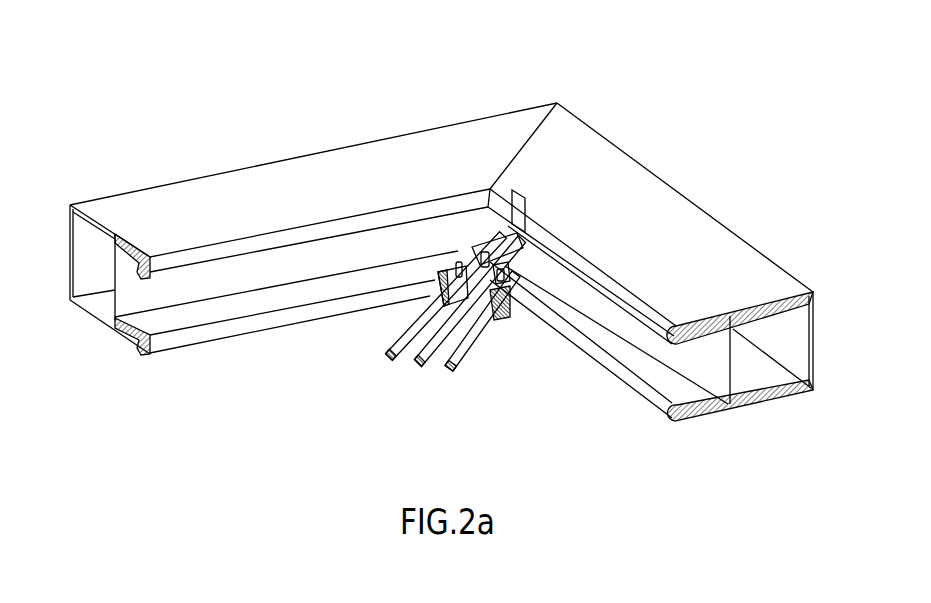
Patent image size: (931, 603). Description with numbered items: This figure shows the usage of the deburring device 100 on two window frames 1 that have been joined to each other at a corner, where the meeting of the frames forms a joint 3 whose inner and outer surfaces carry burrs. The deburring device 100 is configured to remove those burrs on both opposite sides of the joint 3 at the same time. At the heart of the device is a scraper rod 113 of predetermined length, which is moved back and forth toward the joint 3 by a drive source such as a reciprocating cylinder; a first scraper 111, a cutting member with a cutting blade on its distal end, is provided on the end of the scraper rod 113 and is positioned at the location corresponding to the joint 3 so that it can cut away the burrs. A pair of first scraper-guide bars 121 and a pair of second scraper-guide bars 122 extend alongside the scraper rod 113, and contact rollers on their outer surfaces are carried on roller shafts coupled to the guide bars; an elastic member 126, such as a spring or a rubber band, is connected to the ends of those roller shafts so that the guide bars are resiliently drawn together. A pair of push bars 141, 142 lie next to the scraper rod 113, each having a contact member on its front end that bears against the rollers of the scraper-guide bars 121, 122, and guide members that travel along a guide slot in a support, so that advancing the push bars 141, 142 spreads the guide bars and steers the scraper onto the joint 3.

The deburring device 100 is at (441, 246).
The frame member 1 is at (430, 148).
The joint 3 is at (517, 256).
The first scraper 111 is at (519, 202).
The scraper rod 113 is at (418, 370).
The first scraper-guide bars 121 is at (458, 240).
The second scraper-guide bars 122 is at (512, 242).
The elastic member 126 is at (512, 318).
The push bar 141 is at (396, 372).
The push bar 142 is at (476, 350).